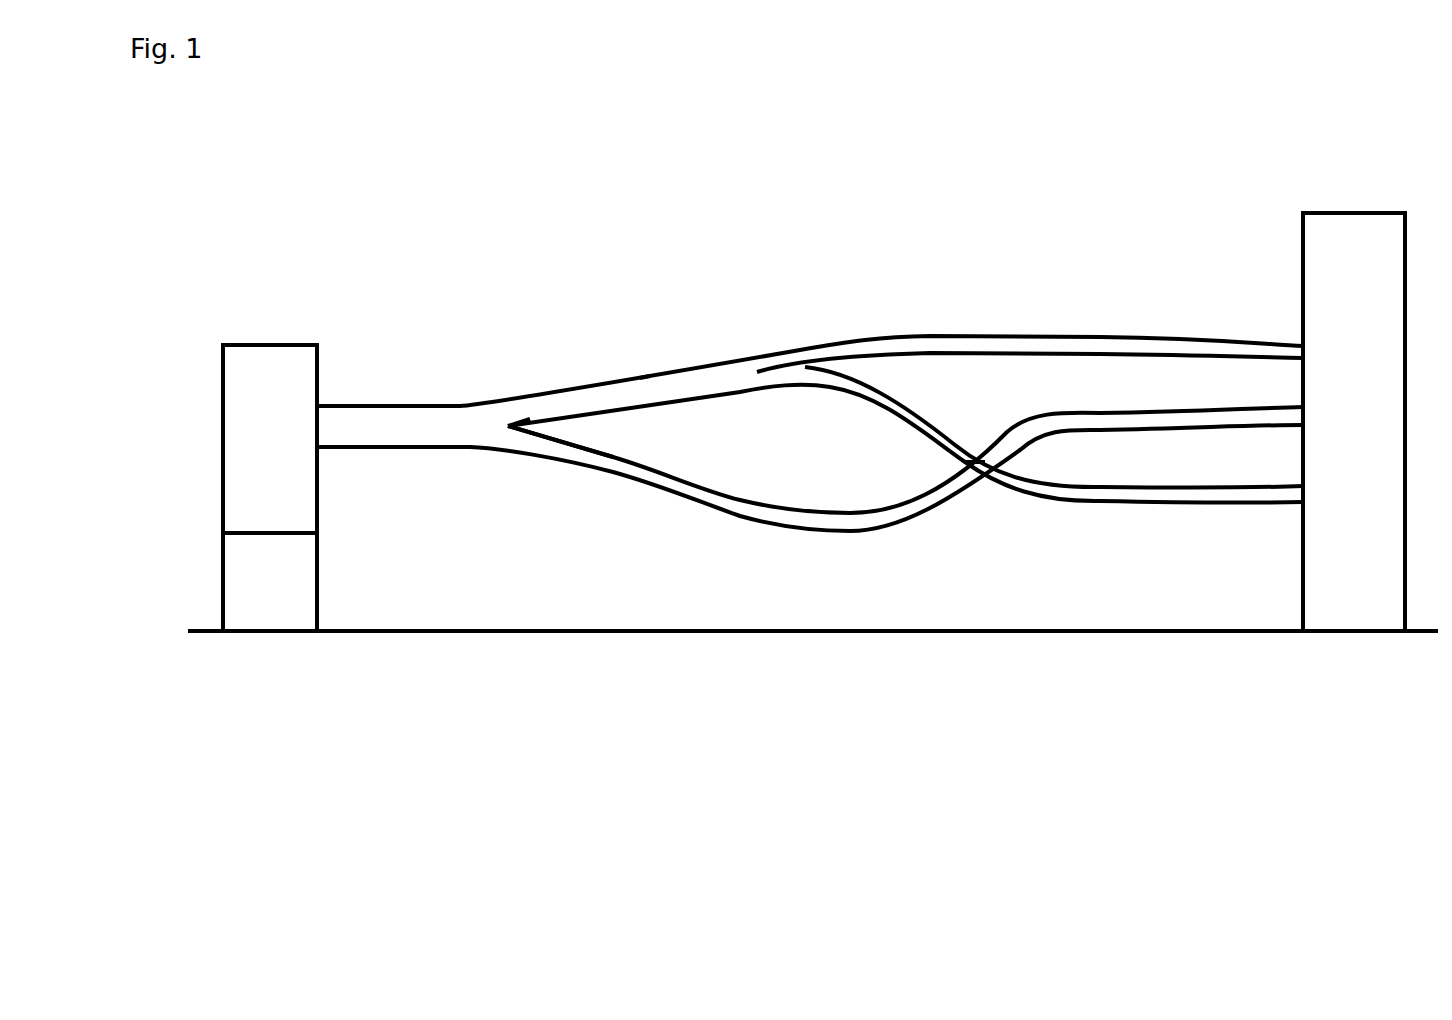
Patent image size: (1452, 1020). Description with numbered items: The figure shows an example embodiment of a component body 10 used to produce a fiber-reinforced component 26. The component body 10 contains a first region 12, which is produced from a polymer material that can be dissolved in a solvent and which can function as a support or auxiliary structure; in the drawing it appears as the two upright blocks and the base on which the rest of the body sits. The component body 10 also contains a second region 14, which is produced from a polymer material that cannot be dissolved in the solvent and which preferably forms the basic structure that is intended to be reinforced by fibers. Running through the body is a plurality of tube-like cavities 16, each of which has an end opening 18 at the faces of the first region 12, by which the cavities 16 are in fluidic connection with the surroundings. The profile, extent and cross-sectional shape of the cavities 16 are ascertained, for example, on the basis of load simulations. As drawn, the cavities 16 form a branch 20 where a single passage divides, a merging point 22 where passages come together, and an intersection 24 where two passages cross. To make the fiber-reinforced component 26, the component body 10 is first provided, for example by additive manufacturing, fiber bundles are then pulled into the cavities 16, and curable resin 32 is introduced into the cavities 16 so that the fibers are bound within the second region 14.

The component body 10 is at (405, 197).
The first region 12 is at (280, 345).
The second region 14 is at (375, 405).
The tube-like cavities 16 is at (432, 412).
The end opening 18 is at (317, 437).
The branch 20 is at (510, 365).
The merging point 22 is at (750, 345).
The intersection 24 is at (985, 436).
The fiber-reinforced component 26 is at (650, 260).
The curable resin 32 is at (640, 472).